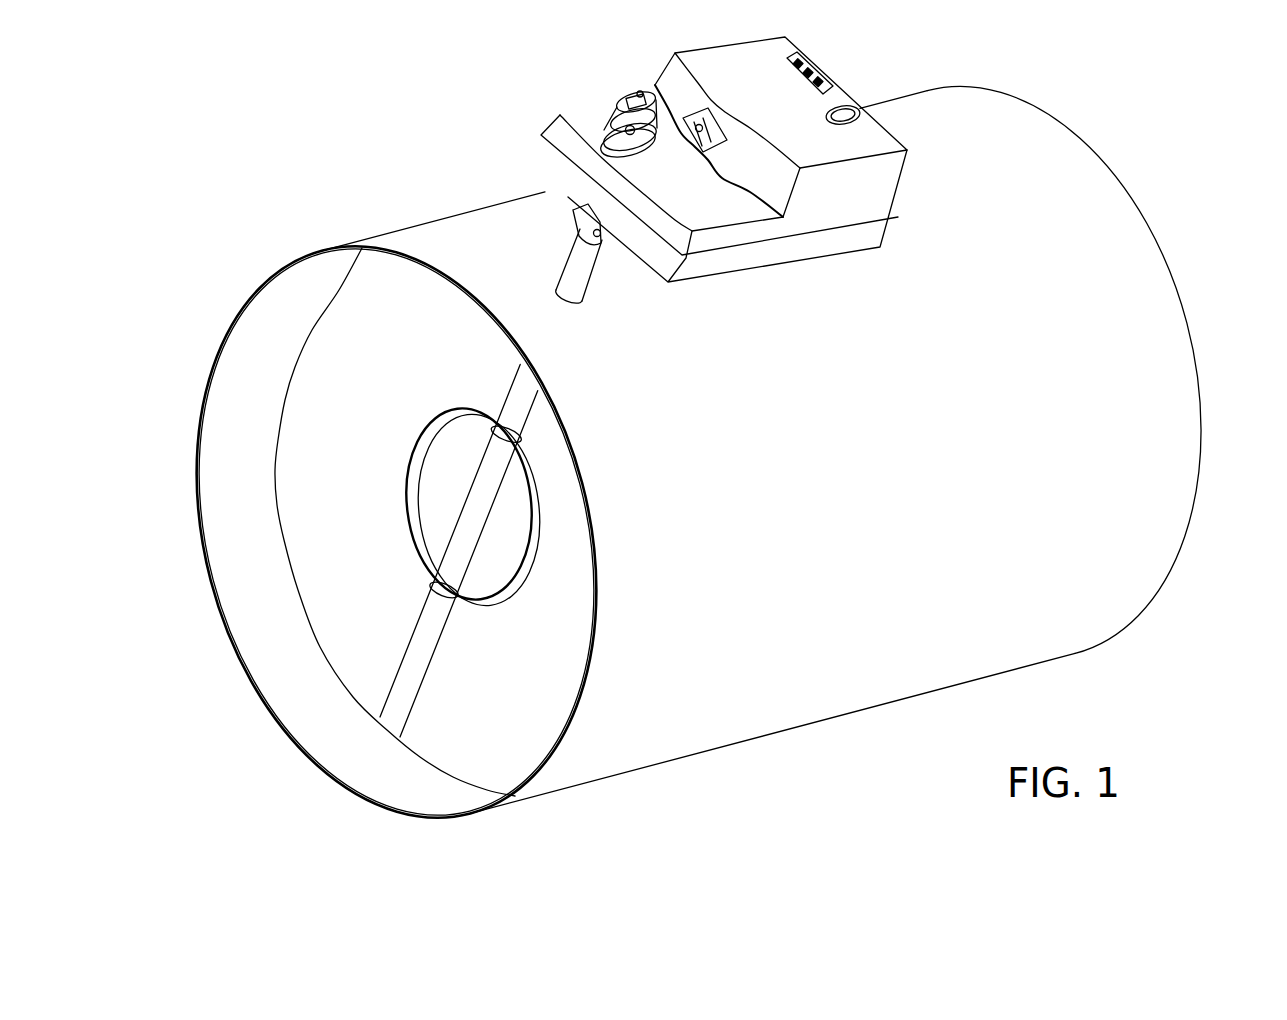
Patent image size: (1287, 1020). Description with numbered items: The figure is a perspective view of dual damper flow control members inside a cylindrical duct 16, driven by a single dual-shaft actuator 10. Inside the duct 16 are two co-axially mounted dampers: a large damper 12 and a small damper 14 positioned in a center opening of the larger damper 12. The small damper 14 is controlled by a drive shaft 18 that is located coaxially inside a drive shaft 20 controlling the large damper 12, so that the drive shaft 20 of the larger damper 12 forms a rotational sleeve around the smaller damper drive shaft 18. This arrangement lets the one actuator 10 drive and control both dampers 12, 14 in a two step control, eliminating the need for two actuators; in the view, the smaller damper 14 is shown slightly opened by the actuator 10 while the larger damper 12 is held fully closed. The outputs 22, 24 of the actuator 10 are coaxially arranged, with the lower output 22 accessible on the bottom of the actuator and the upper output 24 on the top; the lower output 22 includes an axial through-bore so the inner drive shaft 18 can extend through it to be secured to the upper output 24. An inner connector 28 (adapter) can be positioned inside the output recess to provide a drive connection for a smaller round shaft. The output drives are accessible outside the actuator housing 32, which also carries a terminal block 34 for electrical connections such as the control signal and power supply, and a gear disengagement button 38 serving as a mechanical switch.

The dual-shaft actuator 10 is at (581, 86).
The large damper 12 is at (313, 341).
The small damper 14 is at (490, 570).
The duct 16 is at (308, 730).
The drive shaft 18 is at (648, 90).
The drive shaft 20 is at (570, 278).
The lower output 22 is at (577, 224).
The upper output 24 is at (614, 120).
The inner connector 28 is at (650, 93).
The actuator housing 32 is at (752, 54).
The terminal block 34 is at (813, 68).
The gear disengagement button 38 is at (845, 113).